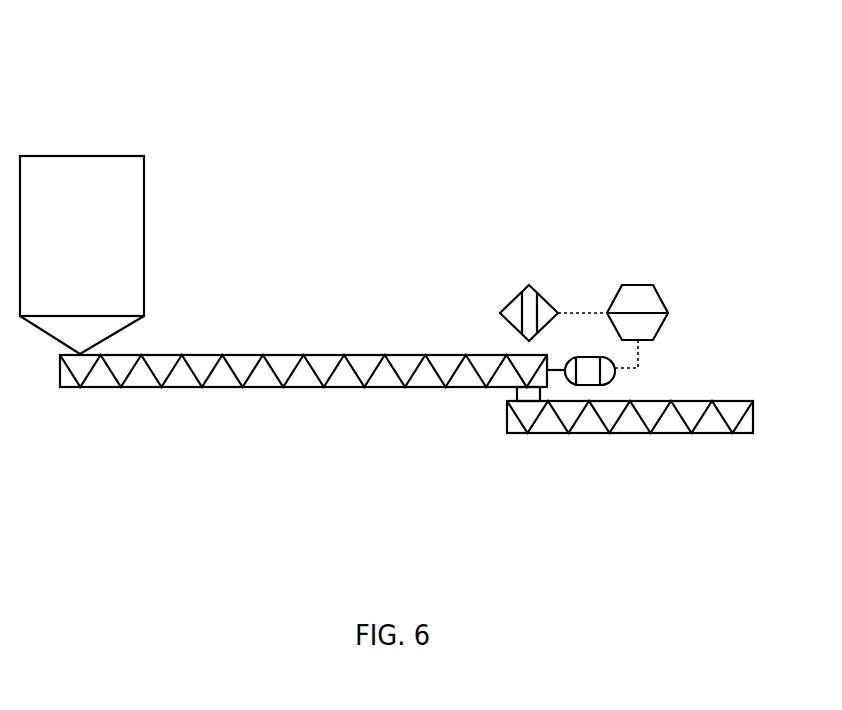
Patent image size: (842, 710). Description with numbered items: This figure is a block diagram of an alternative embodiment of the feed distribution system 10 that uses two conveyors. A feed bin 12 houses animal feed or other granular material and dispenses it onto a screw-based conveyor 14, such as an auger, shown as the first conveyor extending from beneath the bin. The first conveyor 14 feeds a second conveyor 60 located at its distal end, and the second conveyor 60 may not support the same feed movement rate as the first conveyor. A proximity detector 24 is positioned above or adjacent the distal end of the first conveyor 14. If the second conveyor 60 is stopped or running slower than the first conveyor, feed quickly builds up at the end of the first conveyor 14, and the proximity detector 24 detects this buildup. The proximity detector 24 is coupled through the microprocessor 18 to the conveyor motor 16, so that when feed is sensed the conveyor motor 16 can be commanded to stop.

The feed distribution system 10 is at (413, 77).
The feed bin 12 is at (147, 240).
The screw-based conveyor 14 is at (370, 355).
The conveyor motor 16 is at (617, 380).
The microprocessor 18 is at (660, 300).
The proximity detector 24 is at (530, 287).
The second conveyor 60 is at (668, 433).